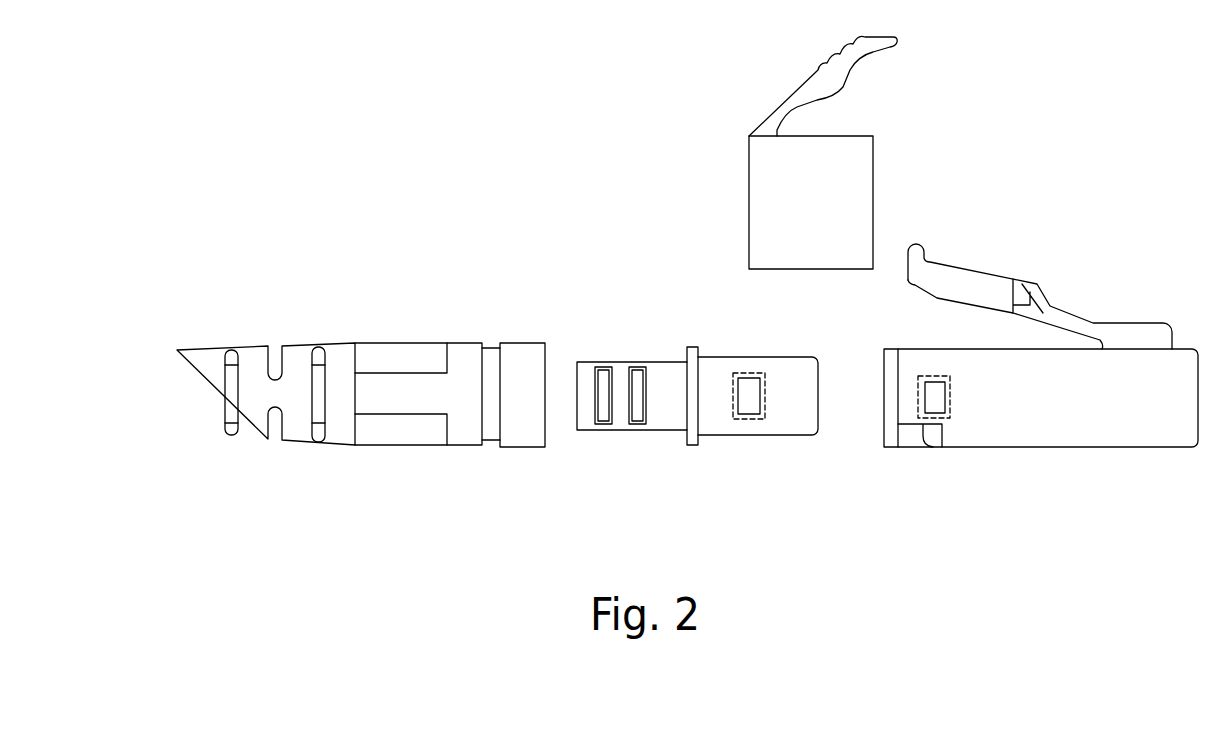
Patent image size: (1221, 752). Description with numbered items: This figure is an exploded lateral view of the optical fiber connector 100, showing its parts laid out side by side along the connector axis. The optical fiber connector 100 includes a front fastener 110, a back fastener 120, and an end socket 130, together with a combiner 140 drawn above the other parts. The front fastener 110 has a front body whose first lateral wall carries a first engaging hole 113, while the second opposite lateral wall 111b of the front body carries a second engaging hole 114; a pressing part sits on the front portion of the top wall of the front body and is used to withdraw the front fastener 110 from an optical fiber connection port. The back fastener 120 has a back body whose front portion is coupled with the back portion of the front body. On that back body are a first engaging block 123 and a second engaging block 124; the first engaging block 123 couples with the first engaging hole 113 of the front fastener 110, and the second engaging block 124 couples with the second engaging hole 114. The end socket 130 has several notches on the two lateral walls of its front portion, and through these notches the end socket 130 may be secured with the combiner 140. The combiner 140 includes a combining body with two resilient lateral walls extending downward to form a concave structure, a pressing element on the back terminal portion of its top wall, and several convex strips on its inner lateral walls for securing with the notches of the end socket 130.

The optical fiber connector 100 is at (357, 123).
The front fastener 110 is at (1052, 238).
The second opposite lateral wall 111b is at (1138, 425).
The first engaging hole 113 is at (917, 397).
The second engaging hole 114 is at (935, 400).
The back fastener 120 is at (664, 308).
The first engaging block 123 is at (752, 373).
The second engaging block 124 is at (750, 406).
The end socket 130 is at (358, 468).
The combiner 140 is at (792, 60).